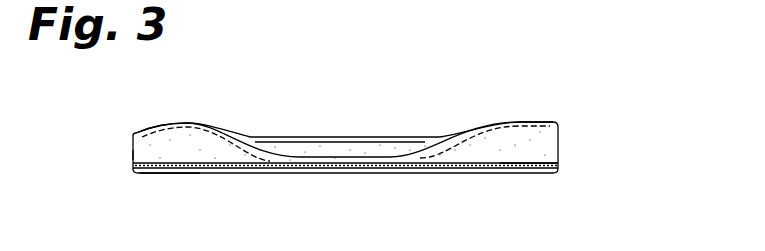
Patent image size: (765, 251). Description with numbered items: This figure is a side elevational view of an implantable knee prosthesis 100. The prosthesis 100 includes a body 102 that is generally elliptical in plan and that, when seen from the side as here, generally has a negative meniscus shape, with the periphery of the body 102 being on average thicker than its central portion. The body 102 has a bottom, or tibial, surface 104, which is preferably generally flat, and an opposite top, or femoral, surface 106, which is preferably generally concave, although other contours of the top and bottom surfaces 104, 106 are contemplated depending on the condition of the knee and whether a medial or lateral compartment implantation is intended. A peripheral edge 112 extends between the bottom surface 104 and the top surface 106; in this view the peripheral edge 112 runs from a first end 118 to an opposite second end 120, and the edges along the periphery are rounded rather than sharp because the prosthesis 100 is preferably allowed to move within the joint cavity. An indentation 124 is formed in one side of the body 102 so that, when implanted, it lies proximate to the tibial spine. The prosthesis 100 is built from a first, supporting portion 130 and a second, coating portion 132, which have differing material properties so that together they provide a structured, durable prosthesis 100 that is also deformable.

The implantable knee prosthesis 100 is at (437, 104).
The body 102 is at (539, 122).
The bottom surface 104 is at (163, 174).
The top surface 106 is at (165, 123).
The peripheral edge 112 is at (135, 152).
The first end 118 is at (559, 145).
The second end 120 is at (133, 142).
The indentation 124 is at (400, 157).
The supporting portion 130 is at (527, 168).
The coating portion 132 is at (187, 149).